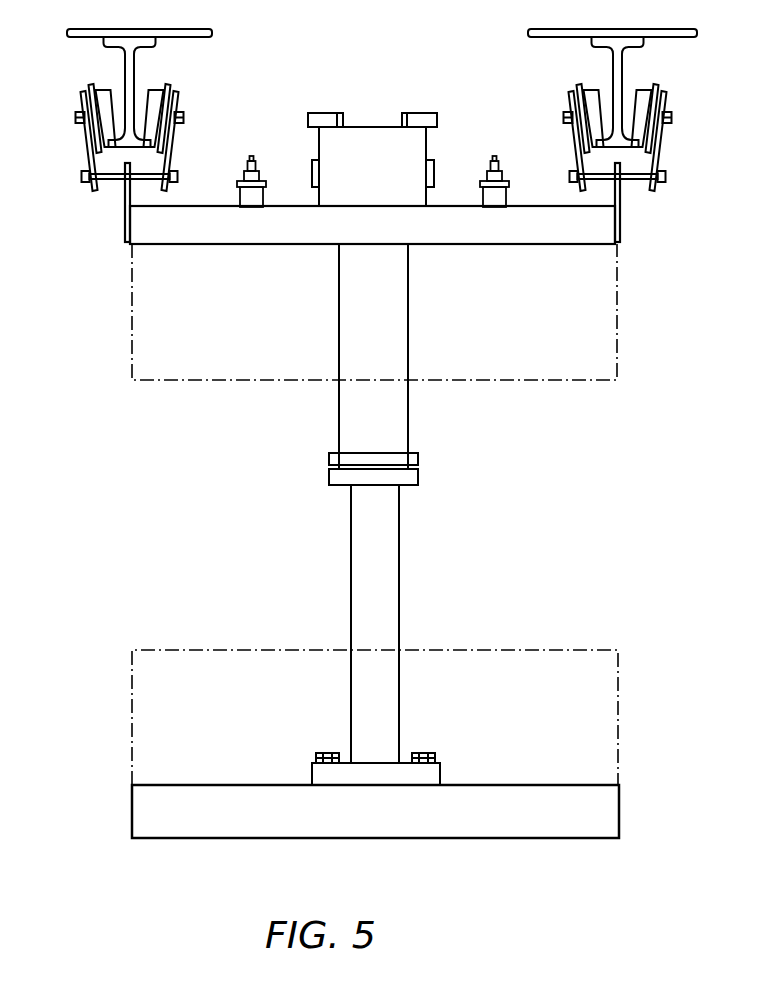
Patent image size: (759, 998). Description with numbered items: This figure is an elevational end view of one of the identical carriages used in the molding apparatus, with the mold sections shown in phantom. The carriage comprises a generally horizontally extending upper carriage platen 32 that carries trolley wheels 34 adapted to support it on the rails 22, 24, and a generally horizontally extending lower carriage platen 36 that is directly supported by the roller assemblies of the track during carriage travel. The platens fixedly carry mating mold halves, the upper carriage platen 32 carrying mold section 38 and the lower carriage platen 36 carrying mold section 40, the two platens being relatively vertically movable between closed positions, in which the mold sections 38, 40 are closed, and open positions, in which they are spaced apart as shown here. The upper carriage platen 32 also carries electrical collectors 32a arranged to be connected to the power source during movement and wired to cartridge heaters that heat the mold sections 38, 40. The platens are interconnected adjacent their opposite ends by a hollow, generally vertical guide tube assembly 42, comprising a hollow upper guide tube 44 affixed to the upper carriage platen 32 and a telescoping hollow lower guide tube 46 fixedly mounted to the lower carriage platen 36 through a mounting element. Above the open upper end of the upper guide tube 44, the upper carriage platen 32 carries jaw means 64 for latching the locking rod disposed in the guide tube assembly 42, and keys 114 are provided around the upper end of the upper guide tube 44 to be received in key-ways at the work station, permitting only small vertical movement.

The rail 22 is at (617, 73).
The rail 24 is at (132, 78).
The trolley wheels 34 is at (110, 132).
The upper carriage platen 32 is at (310, 235).
The electrical collectors 32a is at (250, 156).
The jaw means 64 is at (325, 110).
The keys 114 is at (318, 175).
The mold section 38 is at (272, 368).
The mold section 40 is at (236, 664).
The guide tube assembly 42 is at (432, 475).
The upper guide tube 44 is at (395, 363).
The lower guide tube 46 is at (390, 633).
The lower carriage platen 36 is at (153, 810).